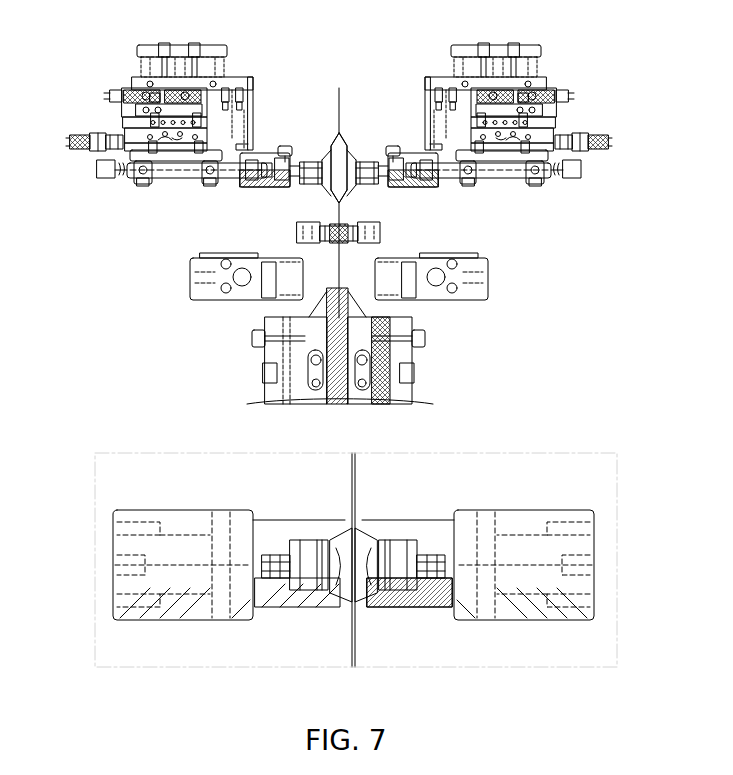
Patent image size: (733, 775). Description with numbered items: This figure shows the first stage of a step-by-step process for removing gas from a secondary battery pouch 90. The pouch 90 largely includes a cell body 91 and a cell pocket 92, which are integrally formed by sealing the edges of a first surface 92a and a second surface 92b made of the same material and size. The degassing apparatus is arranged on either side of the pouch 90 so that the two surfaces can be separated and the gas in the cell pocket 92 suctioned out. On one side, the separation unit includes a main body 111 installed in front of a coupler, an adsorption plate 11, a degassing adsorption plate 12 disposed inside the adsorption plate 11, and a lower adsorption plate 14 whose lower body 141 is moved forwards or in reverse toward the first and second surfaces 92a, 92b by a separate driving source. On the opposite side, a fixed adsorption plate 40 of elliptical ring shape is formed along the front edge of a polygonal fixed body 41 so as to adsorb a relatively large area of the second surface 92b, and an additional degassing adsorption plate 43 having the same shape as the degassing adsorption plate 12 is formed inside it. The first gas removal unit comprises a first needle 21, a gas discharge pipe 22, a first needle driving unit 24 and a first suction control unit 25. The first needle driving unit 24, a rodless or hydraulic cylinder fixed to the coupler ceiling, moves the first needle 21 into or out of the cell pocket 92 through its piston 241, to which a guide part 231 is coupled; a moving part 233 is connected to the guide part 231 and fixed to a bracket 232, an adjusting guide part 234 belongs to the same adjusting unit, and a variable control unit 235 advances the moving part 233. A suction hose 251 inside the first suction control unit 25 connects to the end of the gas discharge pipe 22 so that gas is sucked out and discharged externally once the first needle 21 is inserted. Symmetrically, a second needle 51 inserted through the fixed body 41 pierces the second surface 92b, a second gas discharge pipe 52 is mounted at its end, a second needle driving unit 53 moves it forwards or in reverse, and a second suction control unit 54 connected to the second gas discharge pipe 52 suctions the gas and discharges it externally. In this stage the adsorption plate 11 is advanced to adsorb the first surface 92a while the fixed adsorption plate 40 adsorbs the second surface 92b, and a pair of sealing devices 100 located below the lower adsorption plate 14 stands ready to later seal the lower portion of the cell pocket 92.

The adsorption plate 11 is at (346, 152).
The degassing adsorption plate 12 is at (347, 190).
The lower adsorption plate 14 is at (348, 232).
The first needle 21 is at (392, 160).
The gas discharge pipe 22 is at (518, 180).
The first needle driving unit 24 is at (530, 97).
The first suction control unit 25 is at (572, 180).
The fixed adsorption plate 40 is at (330, 192).
The fixed body 41 is at (290, 148).
The additional degassing adsorption plate 43 is at (312, 185).
The second needle 51 is at (270, 188).
The second gas discharge pipe 52 is at (186, 180).
The second needle driving unit 53 is at (253, 96).
The second suction control unit 54 is at (106, 180).
The pouch 90 is at (329, 286).
The cell body 91 is at (345, 290).
The cell pocket 92 is at (343, 98).
The first surface 92a is at (347, 146).
The second surface 92b is at (331, 146).
The sealing devices 100 is at (252, 258).
The main body 111 is at (375, 152).
The lower body 141 is at (380, 232).
The guide part 231 is at (215, 122).
The bracket 232 is at (225, 150).
The moving part 233 is at (210, 132).
The adjusting guide part 234 is at (556, 134).
The variable control unit 235 is at (82, 133).
The piston 241 is at (525, 113).
The suction hose 251 is at (552, 180).